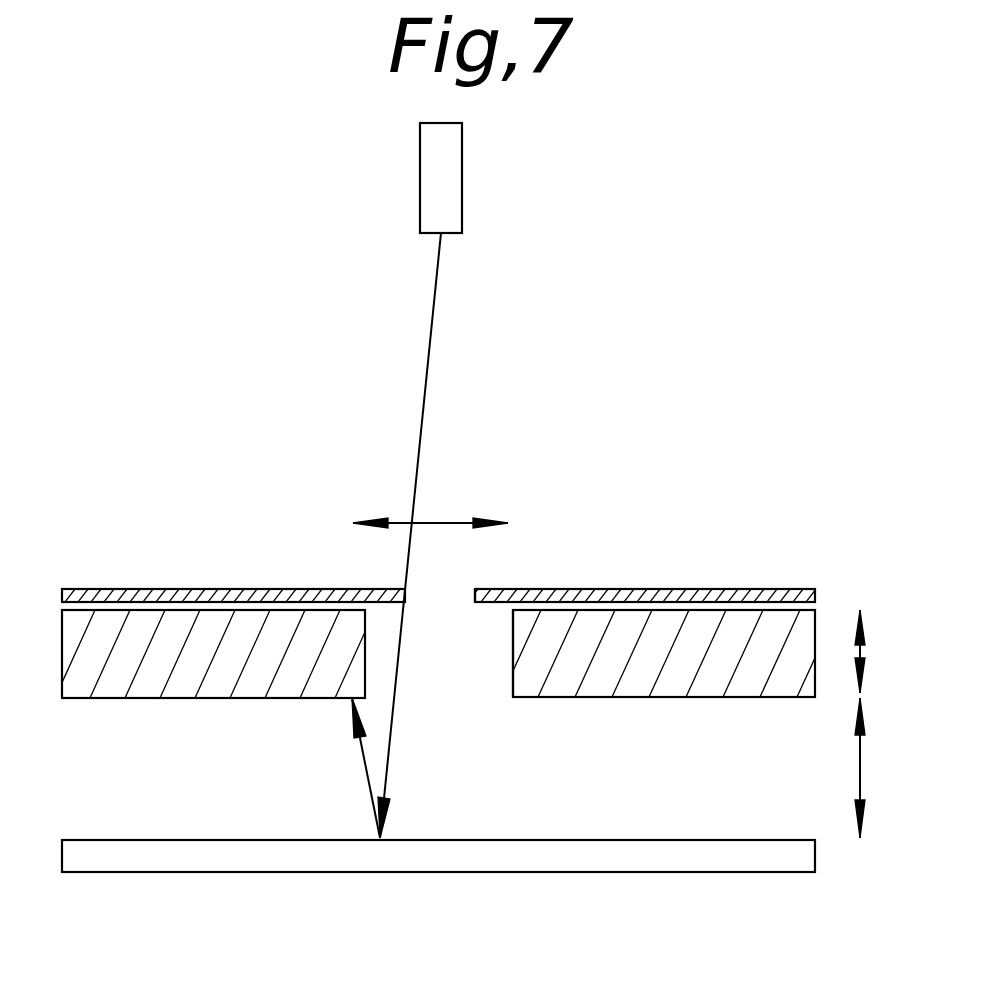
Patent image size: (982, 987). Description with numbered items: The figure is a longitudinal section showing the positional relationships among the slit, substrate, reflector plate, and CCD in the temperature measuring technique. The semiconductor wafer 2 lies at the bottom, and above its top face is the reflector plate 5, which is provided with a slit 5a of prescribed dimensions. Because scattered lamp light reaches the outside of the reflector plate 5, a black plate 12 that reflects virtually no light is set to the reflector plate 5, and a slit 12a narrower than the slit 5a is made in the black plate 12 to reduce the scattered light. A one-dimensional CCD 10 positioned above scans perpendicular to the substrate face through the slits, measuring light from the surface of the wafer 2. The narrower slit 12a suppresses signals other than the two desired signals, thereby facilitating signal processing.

The one-dimensional CCD 10 is at (462, 163).
The black plate 12 is at (773, 597).
The slit 12a is at (476, 592).
The reflector plate 5 is at (800, 632).
The slit 5a is at (512, 688).
The wafer 2 is at (727, 853).